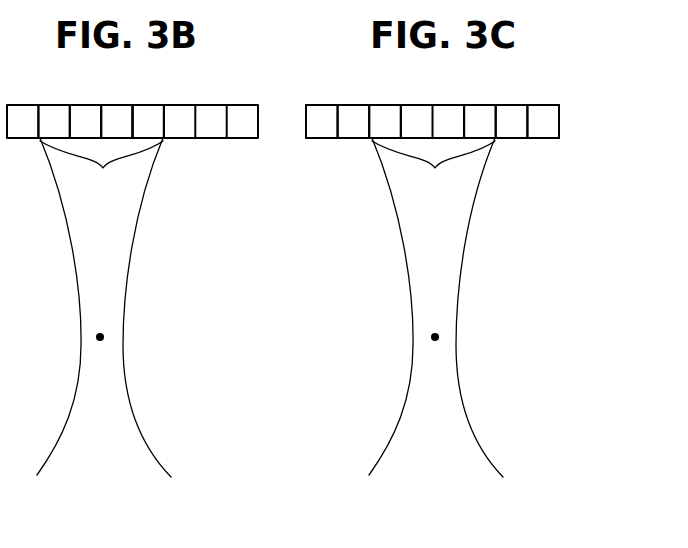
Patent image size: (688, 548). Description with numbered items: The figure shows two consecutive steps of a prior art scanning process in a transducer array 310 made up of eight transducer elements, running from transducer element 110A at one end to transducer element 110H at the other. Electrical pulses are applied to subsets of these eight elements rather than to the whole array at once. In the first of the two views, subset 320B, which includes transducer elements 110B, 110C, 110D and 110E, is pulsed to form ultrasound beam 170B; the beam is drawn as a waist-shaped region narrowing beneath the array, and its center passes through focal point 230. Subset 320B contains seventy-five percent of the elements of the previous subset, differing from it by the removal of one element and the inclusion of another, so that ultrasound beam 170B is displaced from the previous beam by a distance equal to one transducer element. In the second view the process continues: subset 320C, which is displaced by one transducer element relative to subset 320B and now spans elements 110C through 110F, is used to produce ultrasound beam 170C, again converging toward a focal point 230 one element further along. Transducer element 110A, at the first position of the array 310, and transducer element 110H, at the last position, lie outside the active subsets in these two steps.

In FIG. 3C, the transducer element 110A is at (323, 139).
In FIG. 3B, the transducer element 110B is at (62, 87).
In FIG. 3C, the transducer element 110C is at (380, 105).
In FIG. 3B, the transducer element 110D is at (130, 87).
In FIG. 3B, the transducer element 110E is at (146, 104).
In FIG. 3C, the transducer element 110F is at (500, 87).
In FIG. 3C, the transducer element 110H is at (536, 139).
In FIG. 3B, the transducer array 310 is at (258, 121).
In FIG. 3C, the transducer array 310 is at (306, 120).
In FIG. 3B, the subset 320B is at (101, 168).
In FIG. 3C, the subset 320C is at (433, 168).
In FIG. 3B, the ultrasound beam 170B is at (127, 293).
In FIG. 3C, the ultrasound beam 170C is at (458, 293).
In FIG. 3B, the focal point 230 is at (102, 342).
In FIG. 3C, the focal point 230 is at (436, 342).